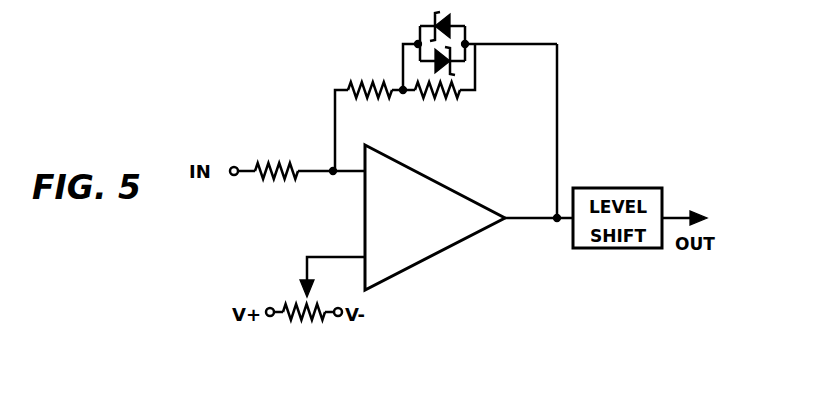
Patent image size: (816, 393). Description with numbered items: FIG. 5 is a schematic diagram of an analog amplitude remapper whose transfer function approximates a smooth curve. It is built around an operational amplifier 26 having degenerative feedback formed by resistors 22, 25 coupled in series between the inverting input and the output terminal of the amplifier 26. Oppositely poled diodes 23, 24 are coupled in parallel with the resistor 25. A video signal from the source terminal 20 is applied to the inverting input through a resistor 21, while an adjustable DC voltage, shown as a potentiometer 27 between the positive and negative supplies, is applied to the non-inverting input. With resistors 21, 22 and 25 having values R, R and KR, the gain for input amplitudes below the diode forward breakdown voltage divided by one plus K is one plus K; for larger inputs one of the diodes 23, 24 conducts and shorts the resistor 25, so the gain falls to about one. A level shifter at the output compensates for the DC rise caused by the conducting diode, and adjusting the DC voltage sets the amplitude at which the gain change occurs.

The source terminal 20 is at (229, 190).
The resistor 21 is at (275, 163).
The resistor 22 is at (380, 84).
The diode 23 is at (450, 17).
The diode 24 is at (450, 73).
The resistor 25 is at (462, 97).
The operational amplifier 26 is at (455, 245).
The offset potentiometer 27 is at (309, 322).